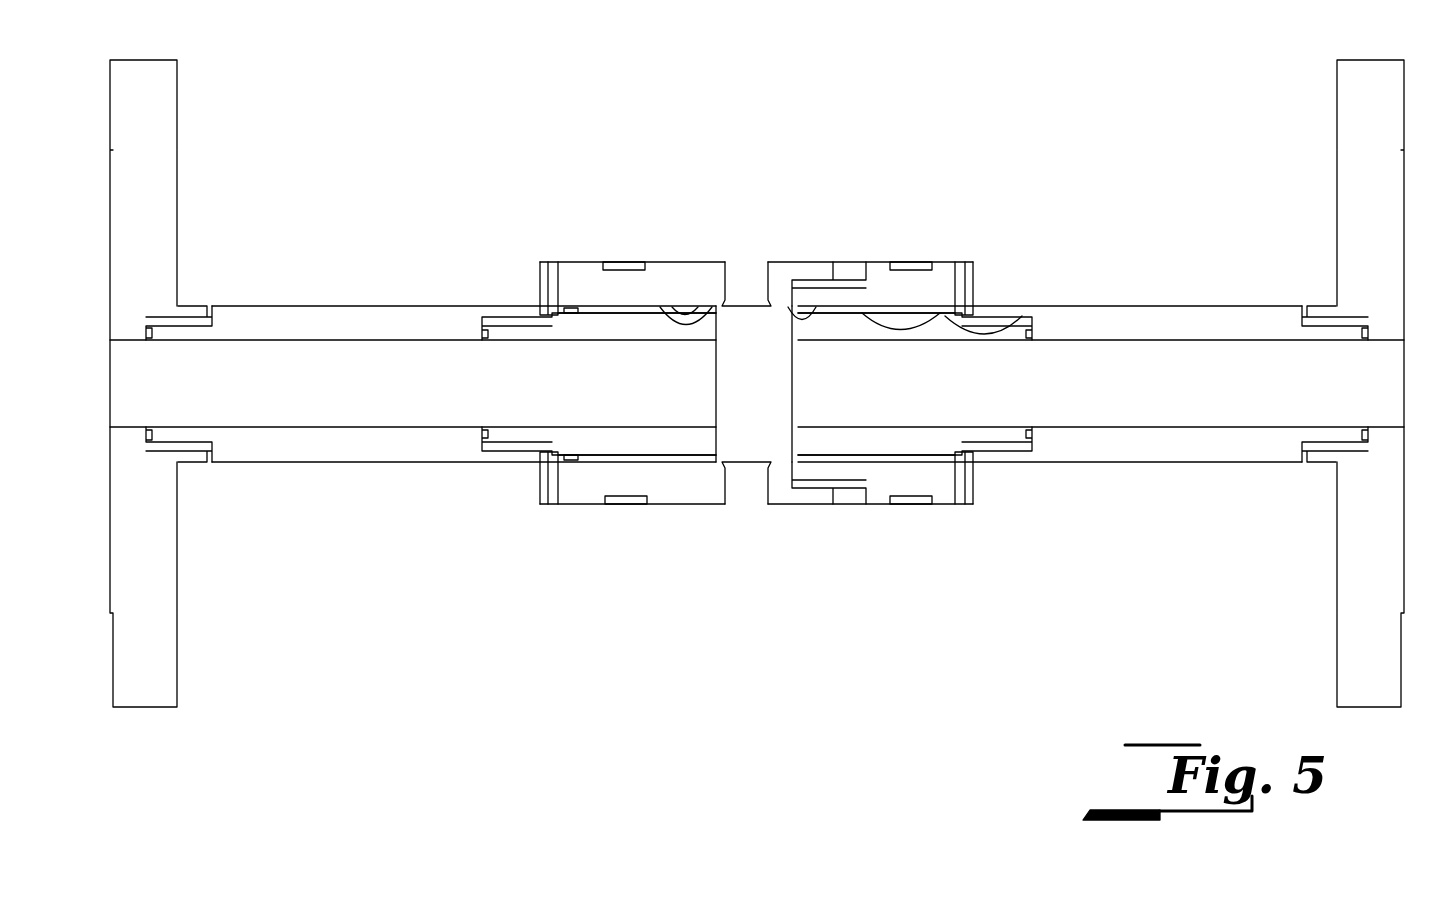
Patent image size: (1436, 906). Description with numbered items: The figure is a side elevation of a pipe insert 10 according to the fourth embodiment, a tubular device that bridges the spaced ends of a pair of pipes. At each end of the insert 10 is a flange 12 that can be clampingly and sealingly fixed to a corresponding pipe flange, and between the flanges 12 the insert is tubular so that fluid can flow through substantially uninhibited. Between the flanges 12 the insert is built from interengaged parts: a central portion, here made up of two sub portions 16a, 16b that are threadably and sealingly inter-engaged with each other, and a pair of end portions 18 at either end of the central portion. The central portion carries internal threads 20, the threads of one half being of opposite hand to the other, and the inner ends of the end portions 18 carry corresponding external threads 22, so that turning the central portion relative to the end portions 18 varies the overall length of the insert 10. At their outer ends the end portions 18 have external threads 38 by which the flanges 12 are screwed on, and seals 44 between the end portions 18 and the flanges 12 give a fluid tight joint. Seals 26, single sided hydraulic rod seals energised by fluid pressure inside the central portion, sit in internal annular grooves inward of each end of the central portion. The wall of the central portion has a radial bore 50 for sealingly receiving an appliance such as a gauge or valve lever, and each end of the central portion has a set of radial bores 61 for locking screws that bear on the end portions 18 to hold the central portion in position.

The pipe insert 10 is at (797, 465).
The flange 12 is at (166, 686).
The central portion sub portion 16a is at (797, 462).
The central portion sub portion 16b is at (910, 532).
The end portion 18 is at (378, 447).
The internal thread 20 is at (676, 318).
The external thread 22 is at (666, 315).
The seal 26 is at (502, 306).
The external thread 38 is at (200, 338).
The seal 44 is at (152, 427).
The radial bore 50 is at (750, 272).
The radial bore 61 is at (550, 262).